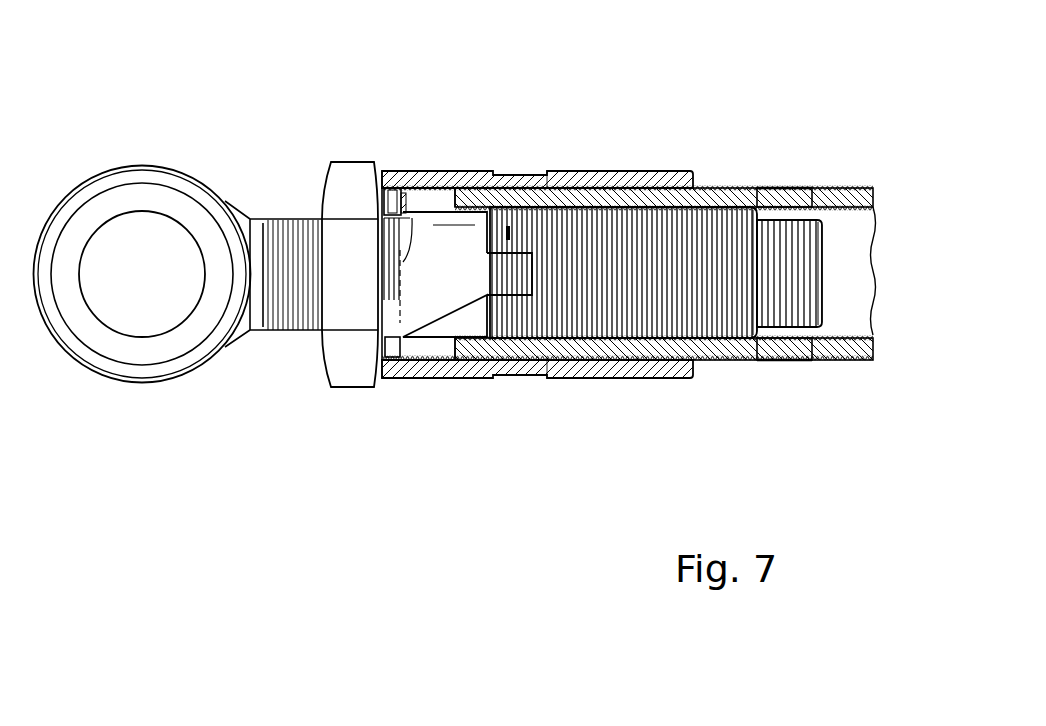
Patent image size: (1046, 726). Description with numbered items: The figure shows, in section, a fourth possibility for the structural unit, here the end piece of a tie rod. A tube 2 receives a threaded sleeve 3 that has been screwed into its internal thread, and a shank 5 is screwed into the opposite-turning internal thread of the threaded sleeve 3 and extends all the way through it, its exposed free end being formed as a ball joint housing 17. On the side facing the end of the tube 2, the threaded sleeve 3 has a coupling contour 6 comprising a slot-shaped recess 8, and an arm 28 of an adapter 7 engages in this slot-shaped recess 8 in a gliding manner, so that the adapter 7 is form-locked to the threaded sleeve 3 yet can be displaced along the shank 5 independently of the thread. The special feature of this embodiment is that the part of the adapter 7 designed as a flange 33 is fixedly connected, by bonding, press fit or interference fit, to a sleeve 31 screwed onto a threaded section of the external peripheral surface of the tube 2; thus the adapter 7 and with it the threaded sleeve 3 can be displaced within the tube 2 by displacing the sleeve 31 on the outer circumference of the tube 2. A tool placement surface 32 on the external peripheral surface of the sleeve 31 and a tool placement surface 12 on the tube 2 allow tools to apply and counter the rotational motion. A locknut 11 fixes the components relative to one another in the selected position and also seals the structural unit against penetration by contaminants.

The tube 2 is at (847, 342).
The threaded sleeve 3 is at (725, 302).
The shank 5 is at (793, 242).
The coupling contour 6 is at (491, 186).
The adapter 7 is at (447, 300).
The slot-shaped recess 8 is at (530, 272).
The locknut 11 is at (353, 370).
The tool placement surface 12 is at (780, 187).
The ball joint housing 17 is at (141, 368).
The arm 28 is at (507, 278).
The sleeve 31 is at (620, 176).
The tool placement surface 32 is at (516, 176).
The flange 33 is at (404, 186).